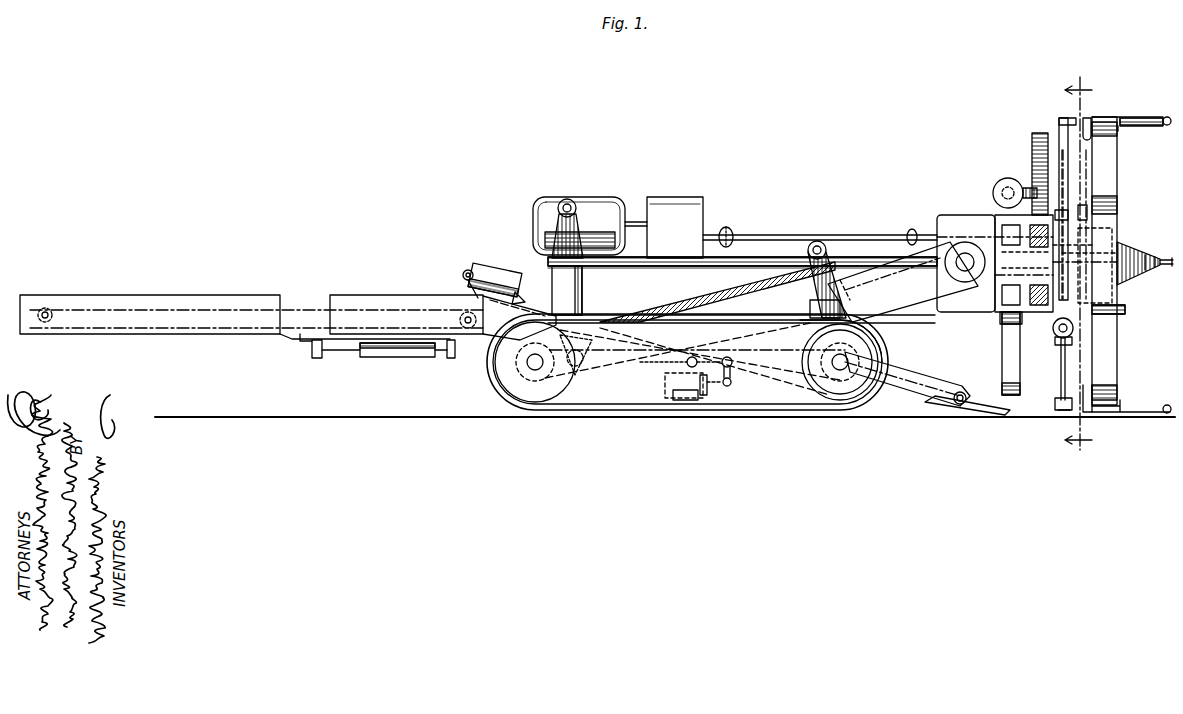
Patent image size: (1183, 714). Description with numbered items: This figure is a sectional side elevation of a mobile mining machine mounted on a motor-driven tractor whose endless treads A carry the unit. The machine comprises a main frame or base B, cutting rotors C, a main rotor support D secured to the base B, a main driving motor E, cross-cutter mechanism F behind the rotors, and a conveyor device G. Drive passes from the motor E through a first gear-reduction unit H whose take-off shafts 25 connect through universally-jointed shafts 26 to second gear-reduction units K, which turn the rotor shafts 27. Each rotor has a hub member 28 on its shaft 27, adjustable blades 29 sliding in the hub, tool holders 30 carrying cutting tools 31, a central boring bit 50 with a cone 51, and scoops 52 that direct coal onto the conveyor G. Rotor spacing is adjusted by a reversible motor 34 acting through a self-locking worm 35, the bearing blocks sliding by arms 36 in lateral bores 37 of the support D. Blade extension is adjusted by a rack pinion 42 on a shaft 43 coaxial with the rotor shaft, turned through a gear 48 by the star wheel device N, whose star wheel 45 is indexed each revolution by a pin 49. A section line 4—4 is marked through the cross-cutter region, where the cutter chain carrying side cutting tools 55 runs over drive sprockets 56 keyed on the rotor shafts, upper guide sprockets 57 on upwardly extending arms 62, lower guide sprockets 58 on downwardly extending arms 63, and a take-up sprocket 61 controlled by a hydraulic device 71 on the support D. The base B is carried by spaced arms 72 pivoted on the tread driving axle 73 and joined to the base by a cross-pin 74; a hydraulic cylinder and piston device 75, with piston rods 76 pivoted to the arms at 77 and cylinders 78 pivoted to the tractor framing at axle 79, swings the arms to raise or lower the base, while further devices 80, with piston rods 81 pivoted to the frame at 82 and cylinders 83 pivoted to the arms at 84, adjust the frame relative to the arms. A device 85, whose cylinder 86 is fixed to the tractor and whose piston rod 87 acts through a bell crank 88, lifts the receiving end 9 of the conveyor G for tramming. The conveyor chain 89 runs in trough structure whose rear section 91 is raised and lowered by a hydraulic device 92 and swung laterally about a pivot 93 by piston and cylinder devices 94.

The conveyor chain 89 is at (190, 318).
The rear section 91 is at (352, 300).
The hydraulic cylinder and piston device 92 is at (490, 270).
The pivot 93 is at (338, 350).
The piston and cylinder devices 94 is at (400, 358).
The conveyor device G is at (500, 308).
The endless treads A is at (500, 390).
The tread driving axle 73 is at (535, 372).
The axle 79 is at (858, 360).
The hydraulic cylinder and piston device 75 is at (868, 332).
The pivotal connection 84 is at (580, 366).
The hydraulic piston and cylinder device 85 is at (703, 398).
The cylinder 86 is at (668, 392).
The piston rod 87 is at (730, 386).
The bell crank 88 is at (733, 365).
The spaced arms 72 is at (738, 306).
The piston rods 76 is at (815, 312).
The pivotal connection 77 is at (822, 244).
The cylinders 78 is at (852, 306).
The cross-pin 74 is at (965, 272).
The second gear-reduction units K is at (942, 224).
The rotor shafts 27 is at (1000, 248).
The main rotor support D is at (996, 222).
The inwardly extending arms 36 is at (1022, 270).
The lateral bores 37 is at (1005, 322).
The motor 34 is at (997, 189).
The worm 35 is at (994, 196).
The pin 49 is at (1060, 214).
The upwardly extending arms 62 is at (1036, 142).
The upper guide sprockets 57 is at (1058, 132).
The side cutting tools 55 is at (1064, 119).
The downwardly extending arms 63 is at (1002, 356).
The drive sprockets 56 is at (1068, 326).
The chain take-up sprocket 61 is at (1058, 342).
The hydraulic cylinder and piston devices 71 is at (1066, 340).
The lower guide sprockets 58 is at (1058, 406).
The cross-cutter mechanism F is at (1060, 414).
The section line 4- 4 is at (1073, 269).
The scoops or shovels 52 is at (1088, 116).
The star wheel device N is at (1085, 207).
The cutting rotors C is at (1115, 180).
The adjustable arms or blades 29 is at (1115, 156).
The star wheel 45 is at (1088, 214).
The tool holders 30 is at (1125, 117).
The cutting tools 31 is at (1163, 124).
The hub member 28 is at (1118, 232).
The gear 48 is at (1112, 308).
The shaft 43 is at (1124, 250).
The pinion 42 is at (1128, 262).
The central boring bits 50 is at (1148, 268).
The cones 51 is at (1140, 275).
The main driving motor E is at (600, 198).
The pivotal connection 82 is at (567, 199).
The piston rods 81 is at (562, 235).
The cylinders 83 is at (586, 285).
The hydraulic cylinder and piston devices 80 is at (590, 302).
The first gear-reduction unit H is at (672, 198).
The take-off shafts 25 is at (724, 229).
The universally-jointed shafts 26 is at (772, 234).
The main frame or base B is at (650, 270).
The receiving end 9 is at (995, 414).